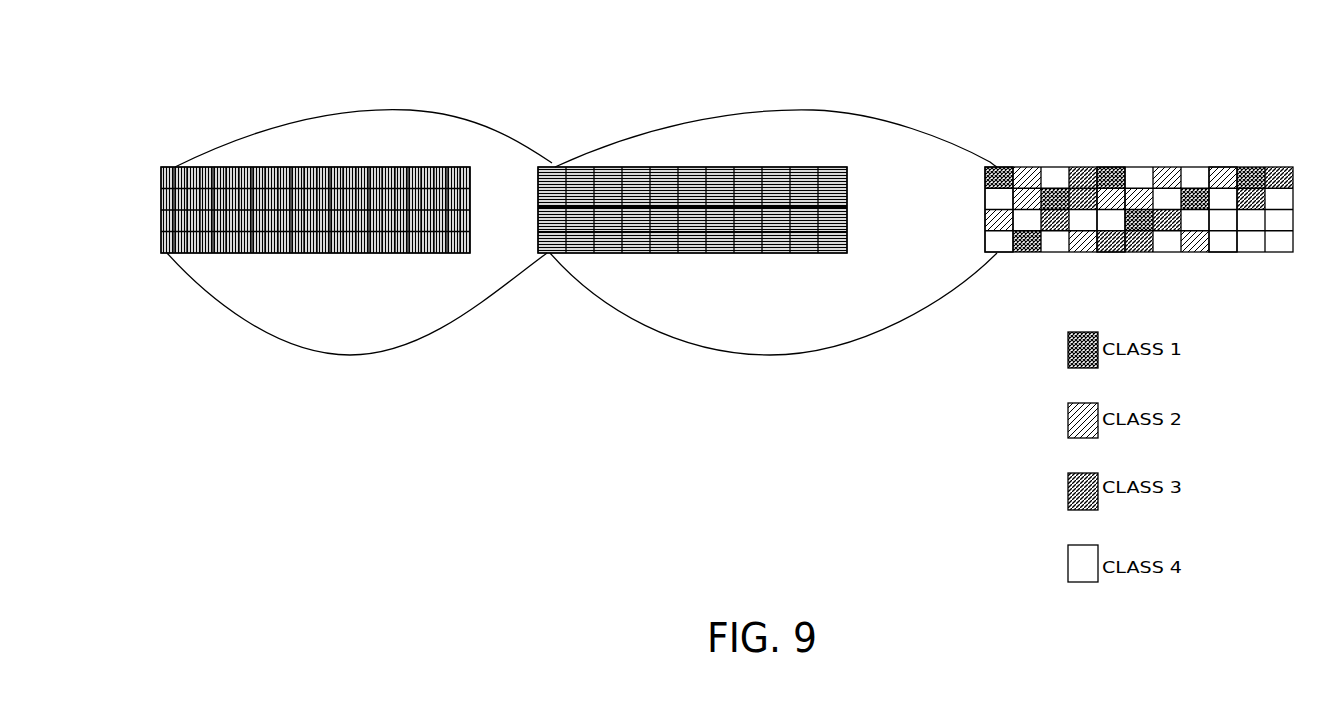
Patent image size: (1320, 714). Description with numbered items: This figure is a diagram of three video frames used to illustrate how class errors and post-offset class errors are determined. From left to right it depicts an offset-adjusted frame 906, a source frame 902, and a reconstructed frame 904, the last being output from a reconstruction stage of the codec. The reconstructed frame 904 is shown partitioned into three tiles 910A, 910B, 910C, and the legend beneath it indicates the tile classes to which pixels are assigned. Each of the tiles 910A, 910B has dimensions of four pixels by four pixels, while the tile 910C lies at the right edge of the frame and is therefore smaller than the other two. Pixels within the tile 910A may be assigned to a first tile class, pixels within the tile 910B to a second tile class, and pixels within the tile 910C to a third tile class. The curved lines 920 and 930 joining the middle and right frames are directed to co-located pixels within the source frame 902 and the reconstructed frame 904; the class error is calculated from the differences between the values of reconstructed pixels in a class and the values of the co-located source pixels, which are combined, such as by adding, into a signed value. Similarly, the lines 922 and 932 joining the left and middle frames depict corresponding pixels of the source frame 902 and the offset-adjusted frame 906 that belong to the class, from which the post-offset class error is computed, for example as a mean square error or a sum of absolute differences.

The offset-adjusted frame 906 is at (297, 107).
The source frame 902 is at (705, 108).
The reconstructed frame 904 is at (1158, 123).
The line 922 is at (363, 138).
The line 932 is at (357, 319).
The line 920 is at (776, 138).
The line 930 is at (773, 318).
The tile 910A is at (995, 167).
The tile 910B is at (1106, 167).
The tile 910C is at (1222, 167).